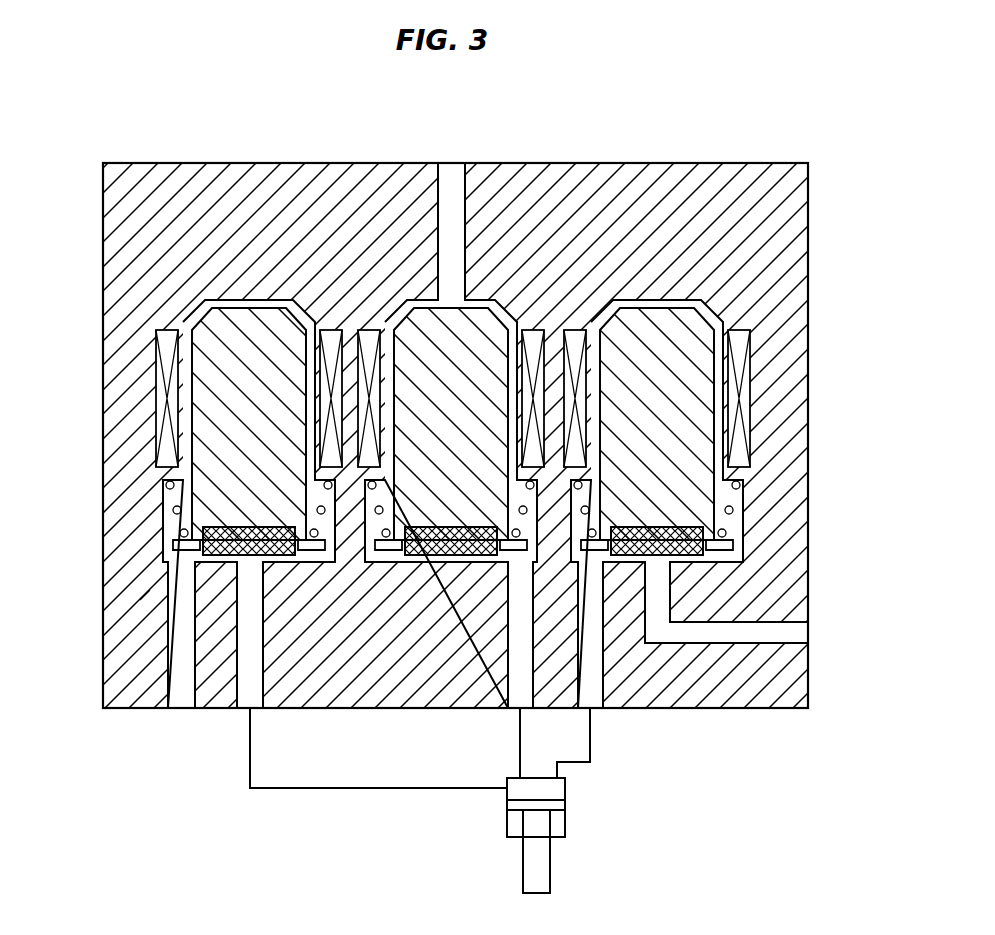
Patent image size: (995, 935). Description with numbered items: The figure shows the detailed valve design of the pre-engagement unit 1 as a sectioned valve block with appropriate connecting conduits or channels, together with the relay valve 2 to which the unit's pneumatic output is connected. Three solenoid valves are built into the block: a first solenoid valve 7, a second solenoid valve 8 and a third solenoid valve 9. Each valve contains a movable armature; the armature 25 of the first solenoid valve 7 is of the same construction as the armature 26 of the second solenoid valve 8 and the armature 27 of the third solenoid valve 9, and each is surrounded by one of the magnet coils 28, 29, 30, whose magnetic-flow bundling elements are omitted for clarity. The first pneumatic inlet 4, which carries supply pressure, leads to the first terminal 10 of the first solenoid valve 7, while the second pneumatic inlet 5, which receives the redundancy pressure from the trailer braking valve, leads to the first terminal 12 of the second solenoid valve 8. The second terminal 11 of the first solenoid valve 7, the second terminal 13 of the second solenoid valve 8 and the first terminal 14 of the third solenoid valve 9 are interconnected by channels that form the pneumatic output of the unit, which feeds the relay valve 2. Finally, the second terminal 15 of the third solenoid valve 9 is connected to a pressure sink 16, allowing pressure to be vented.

The pre-engagement unit 1 is at (645, 101).
The relay valve 2 is at (597, 830).
The first pneumatic inlet 4 is at (795, 632).
The second pneumatic inlet 5 is at (451, 172).
The first solenoid valve 7 is at (672, 268).
The second solenoid valve 8 is at (443, 565).
The third solenoid valve 9 is at (237, 286).
The first terminal 10 is at (658, 578).
The second terminal 11 is at (592, 587).
The first terminal 12 is at (452, 283).
The second terminal 13 is at (527, 588).
The first terminal 14 is at (250, 580).
The second terminal 15 is at (177, 580).
The pressure sink 16 is at (184, 696).
The armature 25 is at (643, 426).
The armature 26 is at (437, 426).
The armature 27 is at (235, 426).
The magnet coil 28 is at (742, 352).
The magnet coil 29 is at (548, 298).
The magnet coil 30 is at (331, 328).